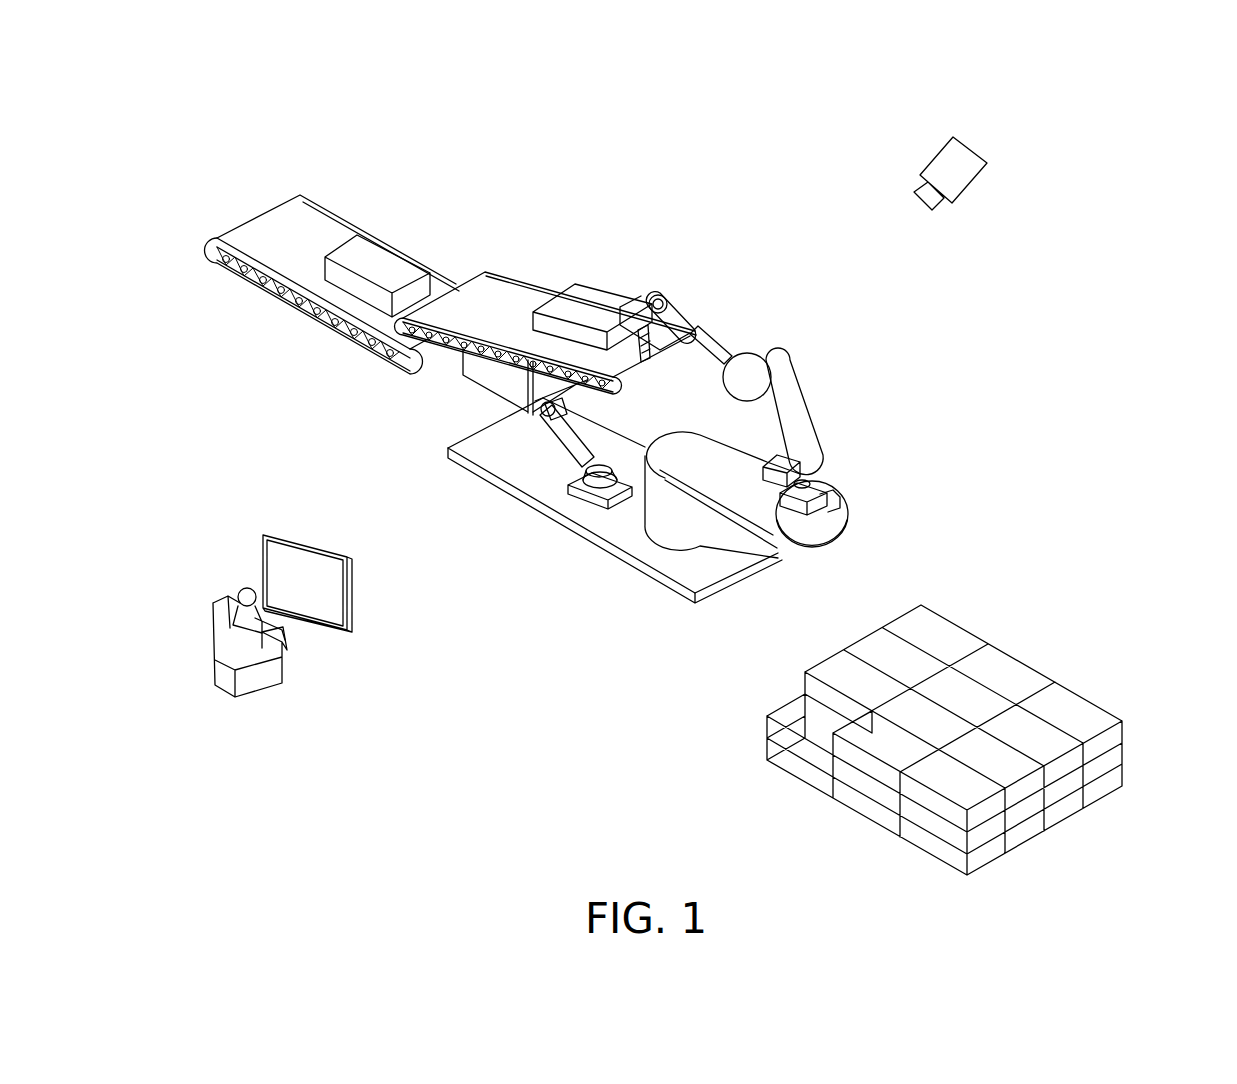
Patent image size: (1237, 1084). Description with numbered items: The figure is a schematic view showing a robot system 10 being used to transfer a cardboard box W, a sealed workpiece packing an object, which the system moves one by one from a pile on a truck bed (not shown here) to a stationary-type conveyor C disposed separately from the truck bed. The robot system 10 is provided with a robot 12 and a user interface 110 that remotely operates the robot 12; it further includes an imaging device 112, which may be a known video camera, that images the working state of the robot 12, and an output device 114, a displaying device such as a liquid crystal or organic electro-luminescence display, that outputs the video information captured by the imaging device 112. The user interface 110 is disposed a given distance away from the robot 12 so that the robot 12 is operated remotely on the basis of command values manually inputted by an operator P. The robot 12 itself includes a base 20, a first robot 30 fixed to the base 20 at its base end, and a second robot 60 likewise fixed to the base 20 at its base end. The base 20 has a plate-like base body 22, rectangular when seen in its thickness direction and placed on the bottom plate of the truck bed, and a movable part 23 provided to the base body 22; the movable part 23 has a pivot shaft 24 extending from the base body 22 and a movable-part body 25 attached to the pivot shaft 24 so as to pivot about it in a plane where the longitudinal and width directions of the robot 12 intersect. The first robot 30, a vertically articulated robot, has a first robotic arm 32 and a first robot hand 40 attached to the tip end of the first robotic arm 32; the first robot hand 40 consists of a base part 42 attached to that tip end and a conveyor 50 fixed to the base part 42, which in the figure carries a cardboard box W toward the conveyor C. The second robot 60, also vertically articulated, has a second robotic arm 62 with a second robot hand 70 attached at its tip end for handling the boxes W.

The robot system 10 is at (168, 92).
The robot 12 is at (600, 166).
The conveyor C is at (318, 234).
The cardboard box W is at (381, 270).
The conveyor 50 is at (504, 296).
The second robot hand 70 is at (672, 298).
The second robot 60 is at (791, 328).
The second robotic arm 62 is at (802, 422).
The movable part 23 is at (696, 416).
The pivot shaft 24 is at (683, 543).
The movable-part body 25 is at (744, 510).
The base 20 is at (436, 462).
The base body 22 is at (470, 478).
The first robot 30 is at (597, 519).
The first robotic arm 32 is at (547, 433).
The first robot hand 40 is at (446, 386).
The base part 42 is at (505, 387).
The imaging device 112 is at (966, 180).
The output device 114 is at (336, 600).
The user interface 110 is at (287, 648).
The operator P is at (243, 587).